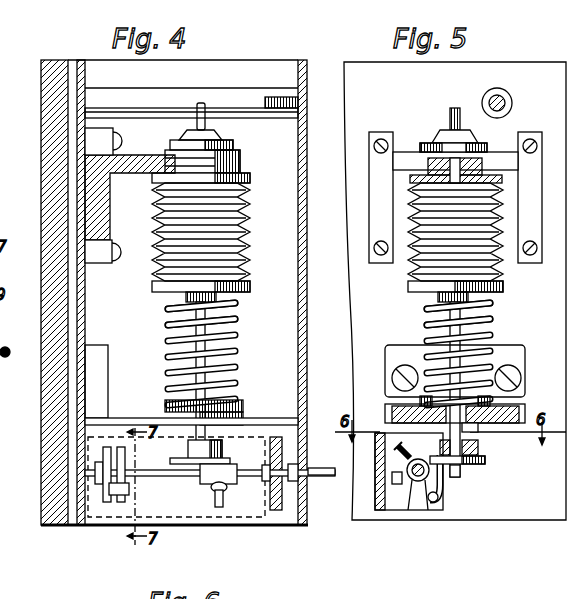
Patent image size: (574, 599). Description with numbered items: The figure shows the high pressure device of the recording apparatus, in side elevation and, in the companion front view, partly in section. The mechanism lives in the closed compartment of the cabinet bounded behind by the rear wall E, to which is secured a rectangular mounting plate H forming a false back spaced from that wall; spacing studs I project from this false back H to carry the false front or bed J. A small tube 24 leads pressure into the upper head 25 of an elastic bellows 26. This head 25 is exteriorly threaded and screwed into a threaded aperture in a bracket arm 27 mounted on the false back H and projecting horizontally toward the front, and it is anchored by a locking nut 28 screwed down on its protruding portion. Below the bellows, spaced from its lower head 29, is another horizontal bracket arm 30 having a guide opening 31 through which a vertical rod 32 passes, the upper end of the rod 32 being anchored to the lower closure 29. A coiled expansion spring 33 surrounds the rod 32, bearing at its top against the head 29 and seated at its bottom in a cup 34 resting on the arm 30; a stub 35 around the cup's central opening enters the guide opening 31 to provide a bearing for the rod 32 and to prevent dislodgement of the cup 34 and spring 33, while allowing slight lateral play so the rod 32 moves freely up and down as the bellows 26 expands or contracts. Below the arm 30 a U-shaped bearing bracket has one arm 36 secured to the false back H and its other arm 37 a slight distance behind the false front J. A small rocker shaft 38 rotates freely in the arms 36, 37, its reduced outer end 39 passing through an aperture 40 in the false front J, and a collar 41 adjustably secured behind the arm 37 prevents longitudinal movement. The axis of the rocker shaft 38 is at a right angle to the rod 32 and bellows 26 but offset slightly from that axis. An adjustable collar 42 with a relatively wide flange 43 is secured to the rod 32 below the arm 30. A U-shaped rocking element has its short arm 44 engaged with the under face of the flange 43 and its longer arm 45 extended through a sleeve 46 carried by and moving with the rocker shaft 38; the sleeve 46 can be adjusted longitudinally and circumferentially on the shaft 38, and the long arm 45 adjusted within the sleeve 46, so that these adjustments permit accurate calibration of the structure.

In FIG. 4, the mounting plate H is at (78, 70).
In FIG. 4, the rear wall E is at (48, 142).
In FIG. 4, the spacing stud I is at (244, 90).
In FIG. 5, the spacing stud I is at (510, 95).
In FIG. 4, the false front J is at (310, 70).
In FIG. 4, the tube 24 is at (198, 103).
In FIG. 5, the tube 24 is at (457, 108).
In FIG. 4, the upper head 25 is at (240, 170).
In FIG. 5, the upper head 25 is at (438, 142).
In FIG. 4, the elastic bellows 26 is at (243, 215).
In FIG. 5, the elastic bellows 26 is at (503, 268).
In FIG. 4, the bracket arm 27 is at (142, 162).
In FIG. 5, the bracket arm 27 is at (510, 163).
In FIG. 4, the locking nut 28 is at (233, 148).
In FIG. 5, the locking nut 28 is at (494, 143).
In FIG. 4, the lower head 29 is at (160, 288).
In FIG. 5, the lower head 29 is at (492, 292).
In FIG. 4, the bracket arm 30 is at (135, 416).
In FIG. 5, the bracket arm 30 is at (505, 407).
In FIG. 5, the guide opening 31 is at (490, 428).
In FIG. 4, the rod 32 is at (234, 310).
In FIG. 5, the rod 32 is at (490, 327).
In FIG. 4, the coiled expansion spring 33 is at (236, 329).
In FIG. 5, the coiled expansion spring 33 is at (428, 312).
In FIG. 4, the cup 34 is at (242, 402).
In FIG. 5, the cup 34 is at (527, 378).
In FIG. 5, the stub 35 is at (392, 398).
In FIG. 4, the bracket arm 36 is at (90, 518).
In FIG. 5, the bracket arm 36 is at (408, 500).
In FIG. 4, the bracket arm 37 is at (276, 438).
In FIG. 4, the rocker shaft 38 is at (158, 477).
In FIG. 5, the rocker shaft 38 is at (421, 500).
In FIG. 4, the outer end 39 is at (320, 469).
In FIG. 4, the aperture 40 is at (313, 462).
In FIG. 4, the collar 41 is at (265, 482).
In FIG. 5, the adjustable collar 42 is at (480, 448).
In FIG. 5, the flange 43 is at (476, 465).
In FIG. 5, the short arm 44 is at (448, 490).
In FIG. 4, the long arm 45 is at (222, 456).
In FIG. 5, the long arm 45 is at (395, 455).
In FIG. 4, the sleeve 46 is at (232, 485).
In FIG. 5, the sleeve 46 is at (385, 510).